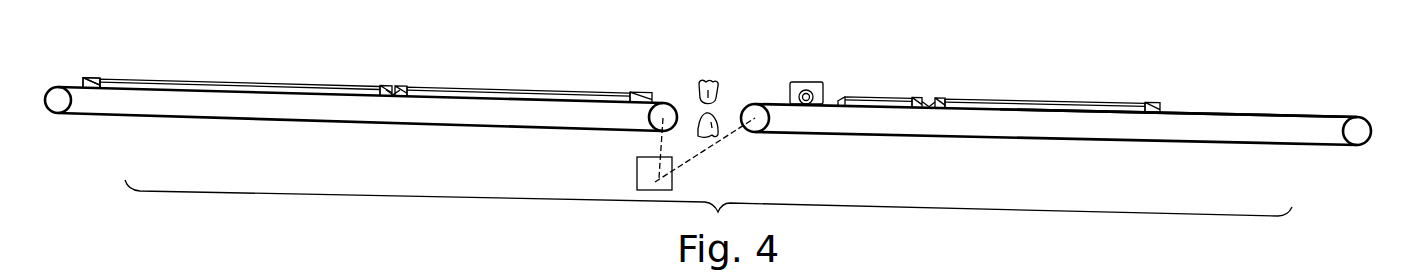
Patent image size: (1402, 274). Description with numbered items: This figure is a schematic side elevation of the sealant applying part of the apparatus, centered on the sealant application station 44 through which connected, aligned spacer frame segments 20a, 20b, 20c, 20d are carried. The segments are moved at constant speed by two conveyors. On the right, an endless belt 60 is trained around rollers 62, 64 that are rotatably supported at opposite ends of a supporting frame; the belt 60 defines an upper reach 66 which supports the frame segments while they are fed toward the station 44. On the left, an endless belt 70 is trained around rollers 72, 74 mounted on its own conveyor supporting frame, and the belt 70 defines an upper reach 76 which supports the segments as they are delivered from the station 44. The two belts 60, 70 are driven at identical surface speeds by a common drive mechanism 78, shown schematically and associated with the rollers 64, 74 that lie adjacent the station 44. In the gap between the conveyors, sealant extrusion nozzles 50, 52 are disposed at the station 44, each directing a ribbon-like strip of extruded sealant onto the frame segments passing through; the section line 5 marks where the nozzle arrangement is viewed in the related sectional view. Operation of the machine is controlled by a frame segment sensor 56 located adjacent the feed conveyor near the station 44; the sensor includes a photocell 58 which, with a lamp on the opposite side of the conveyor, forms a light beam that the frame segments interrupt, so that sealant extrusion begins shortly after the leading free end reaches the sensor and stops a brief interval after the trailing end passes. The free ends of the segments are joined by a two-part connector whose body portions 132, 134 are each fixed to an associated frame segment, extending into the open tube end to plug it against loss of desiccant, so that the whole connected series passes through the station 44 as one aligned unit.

The first tray 20a is at (217, 78).
The second tray 20b is at (560, 57).
The third tray 20c is at (883, 97).
The fourth tray 20d is at (1023, 97).
The sealant application station 44 is at (664, 74).
The sealant extrusion nozzle 50 is at (718, 88).
The sealant extrusion nozzle 52 is at (716, 132).
The frame segment sensor 56 is at (832, 82).
The photocell 58 is at (797, 80).
The endless belt 60 is at (1089, 145).
The roller 62 is at (1355, 135).
The roller 64 is at (758, 132).
The upper reach 66 is at (1217, 113).
The endless belt 70 is at (450, 130).
The roller 72 is at (60, 109).
The roller 74 is at (661, 128).
The upper reach 76 is at (457, 89).
The common drive mechanism 78 is at (638, 175).
The body portion 132 is at (1150, 103).
The body portion 134 is at (102, 79).
The section line 5- 5 is at (678, 46).